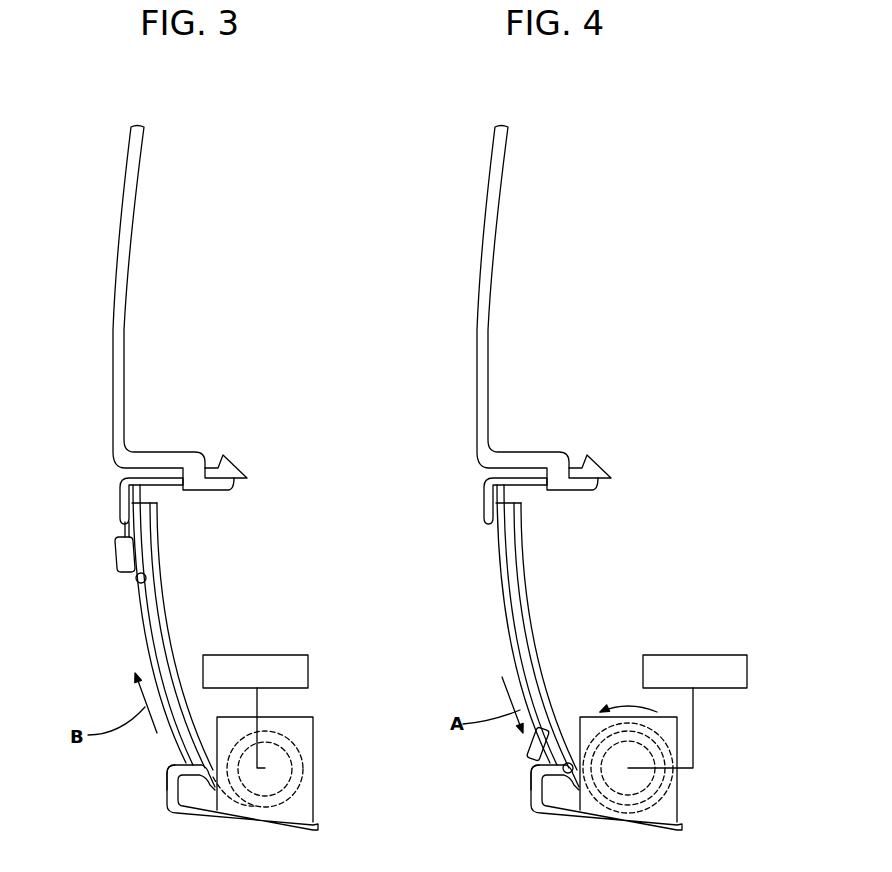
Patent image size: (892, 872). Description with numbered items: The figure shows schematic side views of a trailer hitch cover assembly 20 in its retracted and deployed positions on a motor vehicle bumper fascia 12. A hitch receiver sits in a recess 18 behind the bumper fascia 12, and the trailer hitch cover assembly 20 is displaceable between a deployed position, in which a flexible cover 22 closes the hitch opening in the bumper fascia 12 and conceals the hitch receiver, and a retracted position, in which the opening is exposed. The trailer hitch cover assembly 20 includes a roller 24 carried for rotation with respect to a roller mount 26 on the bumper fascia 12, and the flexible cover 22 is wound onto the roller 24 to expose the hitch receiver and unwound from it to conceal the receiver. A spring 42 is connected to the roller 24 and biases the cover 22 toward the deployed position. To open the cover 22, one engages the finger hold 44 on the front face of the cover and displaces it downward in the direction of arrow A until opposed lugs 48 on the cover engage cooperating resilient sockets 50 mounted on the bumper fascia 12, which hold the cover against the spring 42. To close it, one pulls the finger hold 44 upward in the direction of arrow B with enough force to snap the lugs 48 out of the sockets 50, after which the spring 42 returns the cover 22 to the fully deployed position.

In FIG. 3, the bumper fascia 12 is at (190, 818).
In FIG. 4, the bumper fascia 12 is at (558, 817).
In FIG. 3, the recess 18 is at (207, 597).
In FIG. 4, the recess 18 is at (544, 362).
In FIG. 3, the trailer hitch cover assembly 20 is at (128, 805).
In FIG. 4, the trailer hitch cover assembly 20 is at (446, 546).
In FIG. 3, the flexible cover 22 is at (157, 650).
In FIG. 4, the flexible cover 22 is at (543, 697).
In FIG. 3, the roller 24 is at (268, 762).
In FIG. 4, the roller 24 is at (633, 772).
In FIG. 3, the roller mount 26 is at (313, 785).
In FIG. 4, the roller mount 26 is at (678, 803).
In FIG. 3, the spring 42 is at (272, 655).
In FIG. 4, the spring 42 is at (703, 655).
In FIG. 3, the finger hold 44 is at (118, 555).
In FIG. 4, the finger hold 44 is at (533, 746).
In FIG. 3, the lugs 48 is at (136, 580).
In FIG. 4, the lugs 48 is at (564, 773).
In FIG. 3, the resilient sockets 50 is at (175, 768).
In FIG. 4, the resilient sockets 50 is at (533, 770).